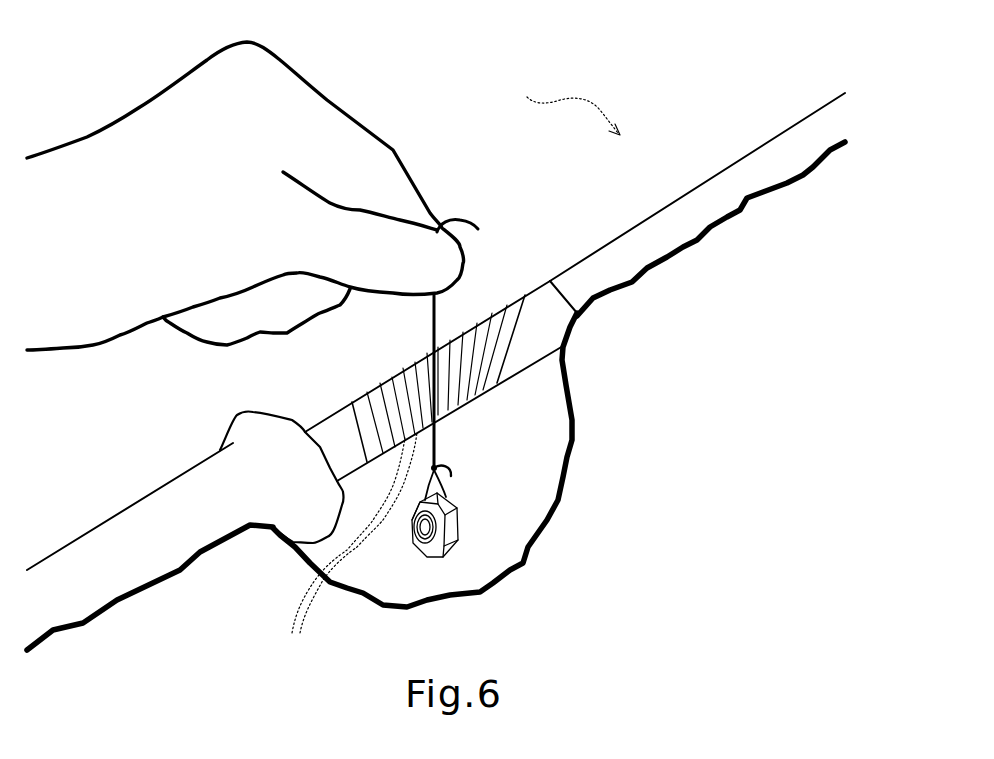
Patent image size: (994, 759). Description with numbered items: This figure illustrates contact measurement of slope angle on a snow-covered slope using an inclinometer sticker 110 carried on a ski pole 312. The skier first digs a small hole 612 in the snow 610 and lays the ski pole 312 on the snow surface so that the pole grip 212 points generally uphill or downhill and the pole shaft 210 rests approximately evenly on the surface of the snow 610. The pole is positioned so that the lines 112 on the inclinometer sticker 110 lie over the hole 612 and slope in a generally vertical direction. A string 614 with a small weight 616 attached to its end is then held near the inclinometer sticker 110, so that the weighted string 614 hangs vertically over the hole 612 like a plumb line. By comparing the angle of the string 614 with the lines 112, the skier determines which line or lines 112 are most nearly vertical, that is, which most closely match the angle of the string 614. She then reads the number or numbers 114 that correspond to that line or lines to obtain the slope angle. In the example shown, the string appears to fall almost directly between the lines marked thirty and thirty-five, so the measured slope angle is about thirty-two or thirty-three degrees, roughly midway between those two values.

The inclinometer sticker 110 is at (549, 290).
The lines 112 is at (400, 370).
The numbers 114 is at (346, 551).
The pole shaft 210 is at (757, 150).
The pole grip 212 is at (127, 517).
The ski pole 312 is at (560, 104).
The snow 610 is at (102, 615).
The hole 612 is at (575, 474).
The string 614 is at (441, 440).
The weight 616 is at (457, 547).